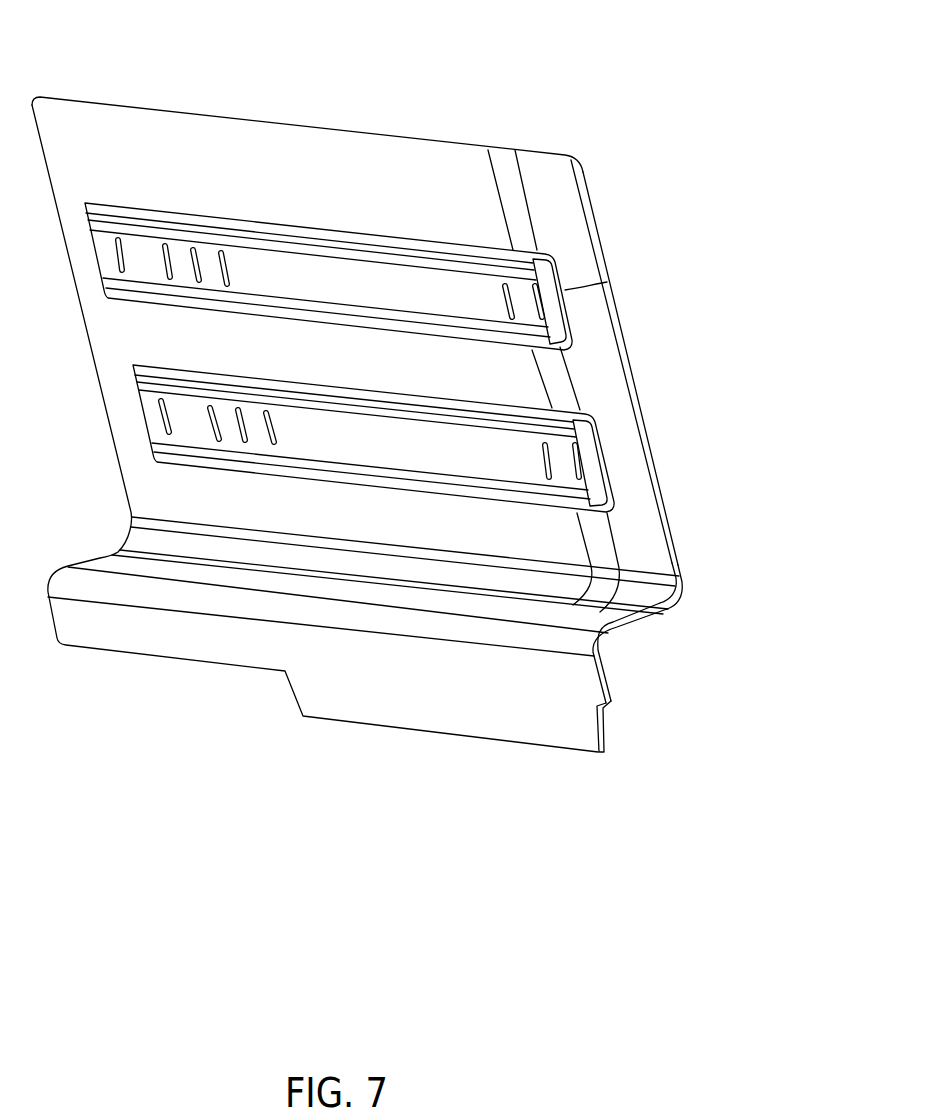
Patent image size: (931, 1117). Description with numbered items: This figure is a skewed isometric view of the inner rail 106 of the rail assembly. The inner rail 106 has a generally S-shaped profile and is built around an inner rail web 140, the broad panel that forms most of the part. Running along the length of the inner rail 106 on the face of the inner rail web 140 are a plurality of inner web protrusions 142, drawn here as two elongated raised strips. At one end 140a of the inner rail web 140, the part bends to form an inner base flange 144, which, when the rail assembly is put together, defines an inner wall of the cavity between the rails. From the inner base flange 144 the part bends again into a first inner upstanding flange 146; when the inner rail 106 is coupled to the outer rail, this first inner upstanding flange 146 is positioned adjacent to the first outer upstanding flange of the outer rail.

The inner rail 106 is at (299, 114).
The inner rail web 140 is at (420, 153).
The inner web protrusions 142 is at (563, 289).
The end of inner rail web 140a is at (681, 603).
The inner base flange 144 is at (618, 636).
The first inner upstanding flange 146 is at (561, 748).